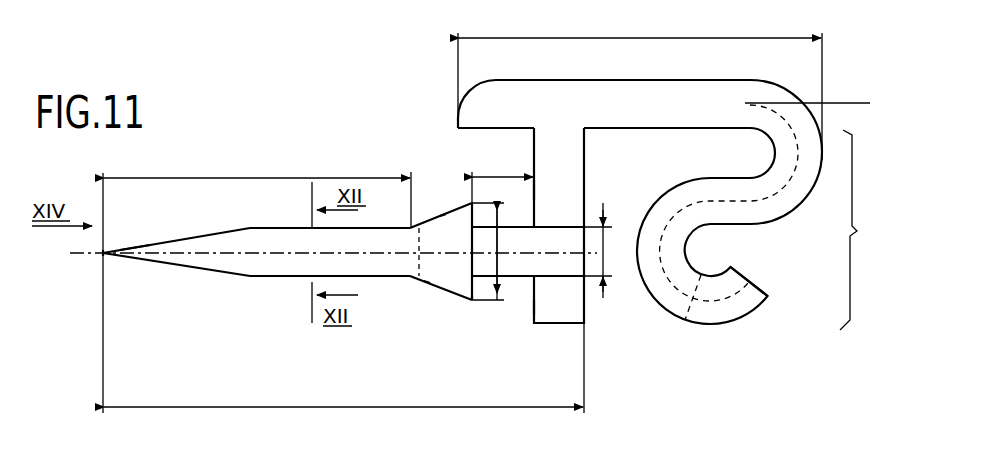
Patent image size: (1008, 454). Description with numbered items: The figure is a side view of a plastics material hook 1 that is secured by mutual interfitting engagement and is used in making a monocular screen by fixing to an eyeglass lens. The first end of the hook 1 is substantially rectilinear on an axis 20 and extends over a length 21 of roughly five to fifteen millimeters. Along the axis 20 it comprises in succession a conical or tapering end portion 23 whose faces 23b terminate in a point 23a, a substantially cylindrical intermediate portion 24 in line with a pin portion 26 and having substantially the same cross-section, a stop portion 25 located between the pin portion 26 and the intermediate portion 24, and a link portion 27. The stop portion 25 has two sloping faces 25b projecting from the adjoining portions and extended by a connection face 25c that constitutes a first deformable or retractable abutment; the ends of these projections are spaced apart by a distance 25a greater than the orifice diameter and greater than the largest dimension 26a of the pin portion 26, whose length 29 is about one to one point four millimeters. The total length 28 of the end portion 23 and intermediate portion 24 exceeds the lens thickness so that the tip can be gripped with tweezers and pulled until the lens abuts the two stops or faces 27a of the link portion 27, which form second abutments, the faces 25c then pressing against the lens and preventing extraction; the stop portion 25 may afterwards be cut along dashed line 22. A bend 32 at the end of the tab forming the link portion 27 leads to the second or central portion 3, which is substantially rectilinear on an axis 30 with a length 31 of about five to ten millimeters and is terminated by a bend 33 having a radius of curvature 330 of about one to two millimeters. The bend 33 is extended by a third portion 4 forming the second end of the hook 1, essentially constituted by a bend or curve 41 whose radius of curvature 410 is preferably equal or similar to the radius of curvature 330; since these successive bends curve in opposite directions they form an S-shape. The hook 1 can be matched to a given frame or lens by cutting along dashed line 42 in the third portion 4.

The hook 1 is at (343, 95).
The second portion 3 is at (653, 93).
The third portion 4 is at (757, 208).
The axis 20 is at (231, 263).
The length 21 is at (343, 293).
The dashed line 22 is at (418, 264).
The end portion 23 is at (157, 263).
The point 23a is at (100, 253).
The faces 23b is at (135, 247).
The intermediate portion 24 is at (267, 269).
The stop portion 25 is at (445, 286).
The distance 25a is at (505, 251).
The sloping faces 25b is at (443, 212).
The connection face 25c is at (474, 300).
The pin portion 26 is at (490, 247).
The largest dimension 26a is at (605, 256).
The link portion 27 is at (550, 242).
The stops or faces 27a is at (534, 208).
The total length 28 is at (257, 191).
The length 29 is at (502, 176).
The axis 30 is at (838, 103).
The length 31 is at (640, 85).
The bend 32 is at (560, 115).
The bend 33 is at (773, 130).
The bend or curve 41 is at (670, 223).
The dashed line 42 is at (700, 302).
The radius of curvature 330 is at (788, 168).
The radius of curvature 410 is at (667, 270).